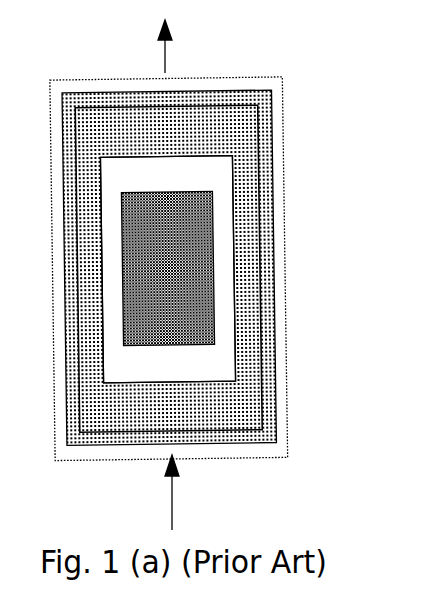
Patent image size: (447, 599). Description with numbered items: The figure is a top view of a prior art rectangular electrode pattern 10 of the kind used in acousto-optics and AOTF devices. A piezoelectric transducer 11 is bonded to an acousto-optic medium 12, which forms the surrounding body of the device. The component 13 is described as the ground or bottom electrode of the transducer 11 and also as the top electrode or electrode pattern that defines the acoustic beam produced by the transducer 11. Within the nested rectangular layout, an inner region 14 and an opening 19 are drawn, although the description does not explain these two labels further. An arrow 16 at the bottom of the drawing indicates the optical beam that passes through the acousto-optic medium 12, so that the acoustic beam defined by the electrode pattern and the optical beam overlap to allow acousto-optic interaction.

The rectangular electrode pattern 10 is at (220, 262).
The piezoelectric transducer 11 is at (97, 108).
The acousto-optic medium 12 is at (283, 134).
The electrode 13 is at (233, 413).
The display area 14 is at (208, 227).
The optical beam arrow 16 is at (194, 495).
The window region 19 is at (223, 313).